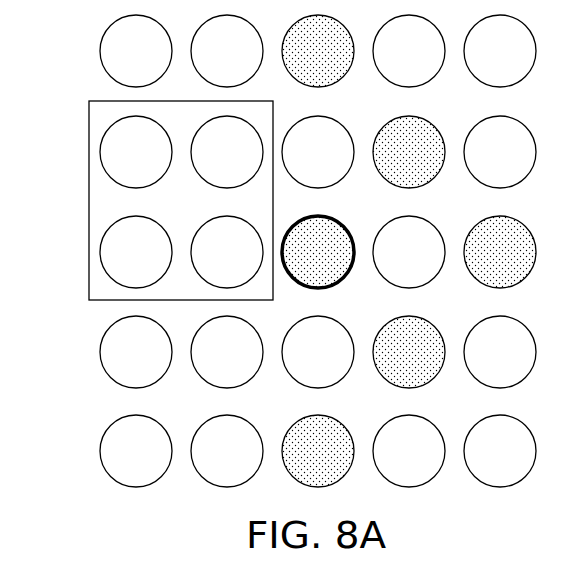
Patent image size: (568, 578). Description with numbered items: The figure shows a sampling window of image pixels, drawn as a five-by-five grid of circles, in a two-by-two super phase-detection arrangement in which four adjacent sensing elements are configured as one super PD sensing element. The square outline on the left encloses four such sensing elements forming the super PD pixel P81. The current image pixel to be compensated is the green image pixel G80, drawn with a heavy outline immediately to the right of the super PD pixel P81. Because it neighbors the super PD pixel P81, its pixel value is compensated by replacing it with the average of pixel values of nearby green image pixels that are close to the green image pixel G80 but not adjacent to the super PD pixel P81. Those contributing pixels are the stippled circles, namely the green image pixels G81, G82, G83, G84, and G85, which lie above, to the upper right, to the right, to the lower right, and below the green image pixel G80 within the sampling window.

The super PD pixel P81 is at (89, 203).
The green image pixel G80 is at (318, 252).
The green image pixel G81 is at (318, 51).
The green image pixel G82 is at (409, 152).
The green image pixel G83 is at (500, 252).
The green image pixel G84 is at (409, 352).
The green image pixel G85 is at (318, 451).